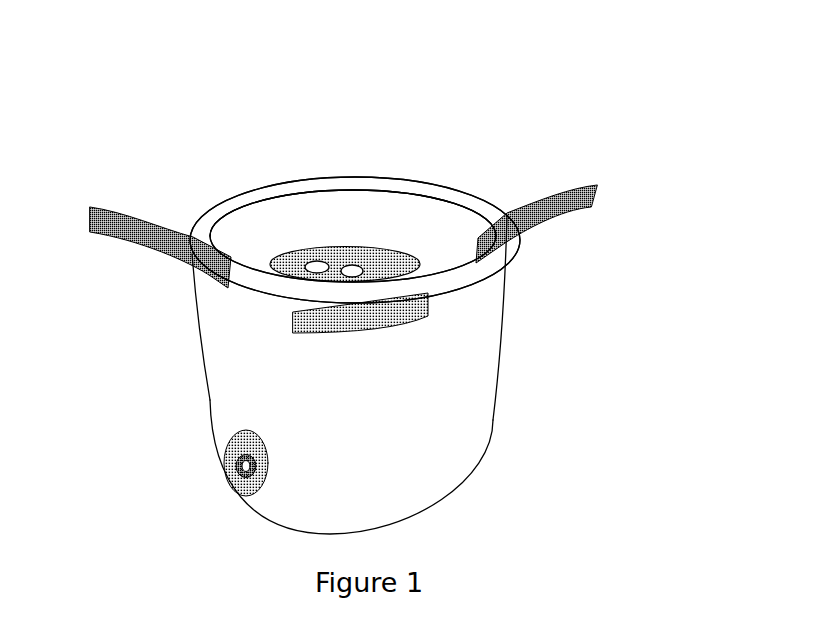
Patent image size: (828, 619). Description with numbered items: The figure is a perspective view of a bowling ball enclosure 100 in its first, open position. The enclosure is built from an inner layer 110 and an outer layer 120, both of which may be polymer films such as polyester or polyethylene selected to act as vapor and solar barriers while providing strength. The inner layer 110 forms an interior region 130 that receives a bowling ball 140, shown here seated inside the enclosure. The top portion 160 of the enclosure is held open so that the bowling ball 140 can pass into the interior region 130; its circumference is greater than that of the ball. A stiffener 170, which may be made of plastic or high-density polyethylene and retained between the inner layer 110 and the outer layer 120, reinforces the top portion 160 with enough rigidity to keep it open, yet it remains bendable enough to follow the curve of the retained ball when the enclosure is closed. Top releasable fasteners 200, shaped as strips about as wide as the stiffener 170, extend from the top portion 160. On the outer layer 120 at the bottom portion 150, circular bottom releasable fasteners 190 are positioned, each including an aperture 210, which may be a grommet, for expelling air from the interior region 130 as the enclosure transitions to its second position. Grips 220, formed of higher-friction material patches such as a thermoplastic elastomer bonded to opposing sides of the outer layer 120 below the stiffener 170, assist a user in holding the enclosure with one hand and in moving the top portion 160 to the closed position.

The bowling ball enclosure 100 is at (338, 58).
The inner layer 110 is at (340, 212).
The outer layer 120 is at (493, 422).
The interior region 130 is at (300, 222).
The bowling ball 140 is at (390, 248).
The bottom portion 150 is at (455, 506).
The top portion 160 is at (432, 167).
The stiffener 170 is at (380, 178).
The bottom releasable fasteners 190 is at (223, 447).
The top releasable fasteners 200 is at (150, 223).
The aperture 210 is at (237, 470).
The grips 220 is at (430, 302).